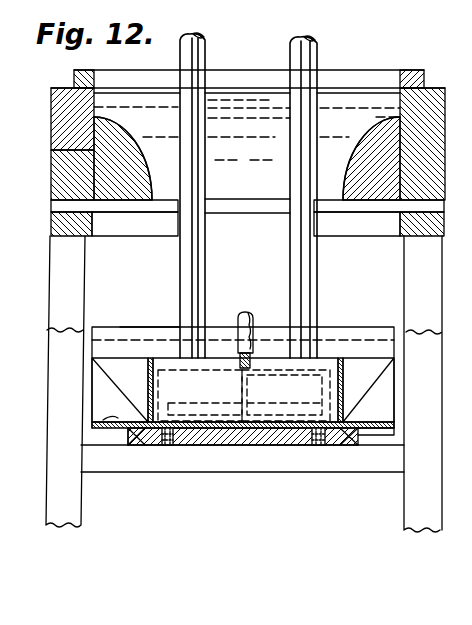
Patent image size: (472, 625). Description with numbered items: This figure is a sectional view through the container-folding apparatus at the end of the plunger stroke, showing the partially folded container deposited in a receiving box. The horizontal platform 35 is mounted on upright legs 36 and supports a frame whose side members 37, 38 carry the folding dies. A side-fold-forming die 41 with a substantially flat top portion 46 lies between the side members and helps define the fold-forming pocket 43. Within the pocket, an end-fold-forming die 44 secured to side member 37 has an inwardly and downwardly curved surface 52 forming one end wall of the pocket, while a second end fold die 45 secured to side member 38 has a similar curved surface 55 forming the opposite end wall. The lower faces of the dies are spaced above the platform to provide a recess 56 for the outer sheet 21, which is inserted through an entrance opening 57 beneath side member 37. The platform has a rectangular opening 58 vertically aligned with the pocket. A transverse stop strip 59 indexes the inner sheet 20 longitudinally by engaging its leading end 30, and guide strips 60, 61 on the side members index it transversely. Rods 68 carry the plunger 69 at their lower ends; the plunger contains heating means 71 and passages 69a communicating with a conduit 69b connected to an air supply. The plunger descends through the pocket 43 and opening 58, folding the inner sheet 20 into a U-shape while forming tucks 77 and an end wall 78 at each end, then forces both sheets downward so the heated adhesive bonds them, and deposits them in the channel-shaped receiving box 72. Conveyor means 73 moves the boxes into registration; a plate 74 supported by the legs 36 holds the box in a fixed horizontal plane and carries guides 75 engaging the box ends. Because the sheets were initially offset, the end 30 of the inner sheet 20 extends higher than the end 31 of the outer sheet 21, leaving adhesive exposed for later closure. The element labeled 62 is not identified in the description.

The inner sheet 20 is at (105, 340).
The outer sheet 21 is at (117, 424).
The leading end of the inner sheet 30 is at (134, 327).
The leading end of the outer sheet 31 is at (150, 340).
The horizontal platform 35 is at (52, 228).
The upright legs 36 is at (73, 277).
The side member 37 is at (55, 140).
The side member 38 is at (432, 92).
The side-fold-forming die 41 is at (342, 106).
The fold-forming pocket 43 is at (338, 206).
The end-fold-forming die 44 is at (122, 140).
The second end fold die 45 is at (352, 160).
The flat top portion 46 is at (130, 89).
The curved surface 52 is at (152, 176).
The curved surface 55 is at (368, 140).
The recess 56 is at (372, 206).
The entrance opening 57 is at (55, 205).
The rectangular opening 58 is at (94, 220).
The transverse stop strip 59 is at (245, 79).
The guide strip 60 is at (80, 78).
The guide strip 61 is at (415, 78).
The center bar 62 is at (250, 206).
The rods 68 is at (185, 276).
The plunger 69 is at (212, 370).
The passages 69a is at (244, 395).
The conduit 69b is at (246, 320).
The heating means 71 is at (284, 395).
The receiving box 72 is at (215, 446).
The conveyor means 73 is at (168, 446).
The plate 74 is at (273, 460).
The guides 75 is at (370, 437).
The tucks 77 is at (118, 380).
The end wall 78 is at (148, 380).